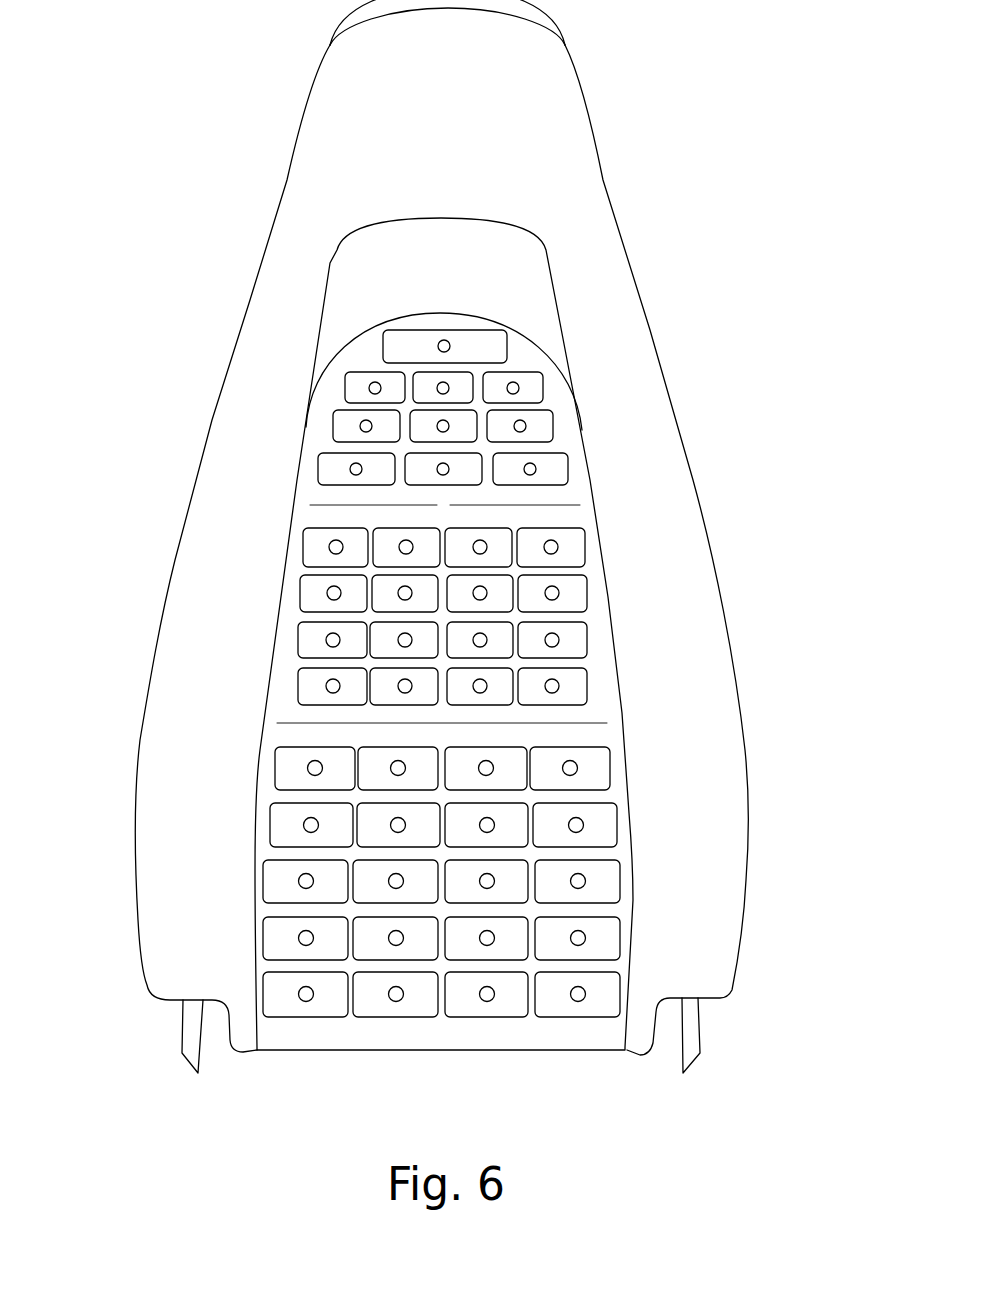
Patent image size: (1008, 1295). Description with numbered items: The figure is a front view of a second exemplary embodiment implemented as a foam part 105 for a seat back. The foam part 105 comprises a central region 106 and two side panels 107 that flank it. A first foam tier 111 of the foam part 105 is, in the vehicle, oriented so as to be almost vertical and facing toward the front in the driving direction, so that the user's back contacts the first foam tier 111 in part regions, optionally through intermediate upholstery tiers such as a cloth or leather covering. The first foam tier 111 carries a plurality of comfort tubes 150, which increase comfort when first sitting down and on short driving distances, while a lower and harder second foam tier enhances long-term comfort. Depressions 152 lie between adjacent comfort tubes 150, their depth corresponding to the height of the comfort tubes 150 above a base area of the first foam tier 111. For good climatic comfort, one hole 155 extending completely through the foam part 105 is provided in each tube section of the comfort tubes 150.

The foam part 105 is at (665, 171).
The central region 106 is at (300, 735).
The side panels 107 is at (245, 507).
The first foam tier 111 is at (607, 463).
The comfort tubes 150 is at (495, 635).
The depressions 152 is at (518, 357).
The hole 155 is at (326, 640).